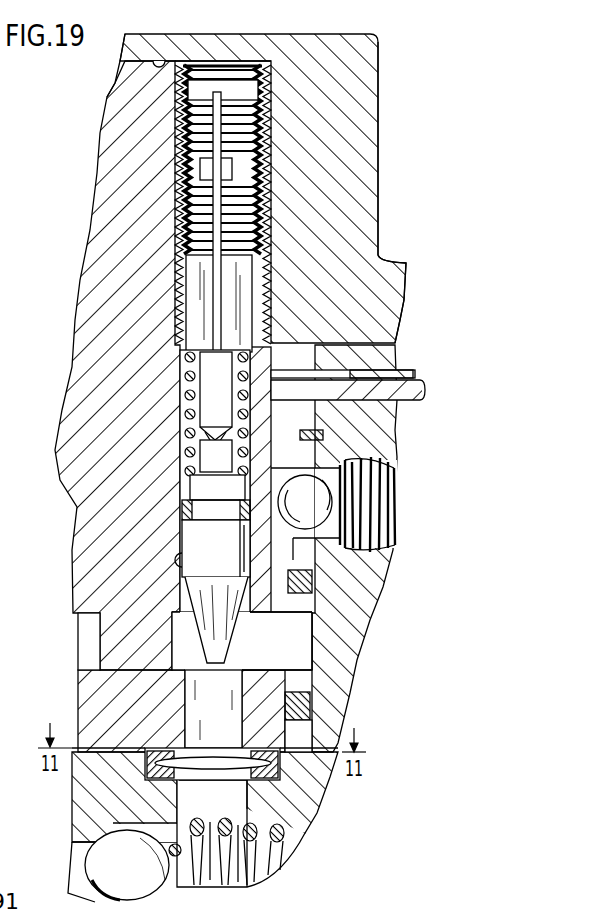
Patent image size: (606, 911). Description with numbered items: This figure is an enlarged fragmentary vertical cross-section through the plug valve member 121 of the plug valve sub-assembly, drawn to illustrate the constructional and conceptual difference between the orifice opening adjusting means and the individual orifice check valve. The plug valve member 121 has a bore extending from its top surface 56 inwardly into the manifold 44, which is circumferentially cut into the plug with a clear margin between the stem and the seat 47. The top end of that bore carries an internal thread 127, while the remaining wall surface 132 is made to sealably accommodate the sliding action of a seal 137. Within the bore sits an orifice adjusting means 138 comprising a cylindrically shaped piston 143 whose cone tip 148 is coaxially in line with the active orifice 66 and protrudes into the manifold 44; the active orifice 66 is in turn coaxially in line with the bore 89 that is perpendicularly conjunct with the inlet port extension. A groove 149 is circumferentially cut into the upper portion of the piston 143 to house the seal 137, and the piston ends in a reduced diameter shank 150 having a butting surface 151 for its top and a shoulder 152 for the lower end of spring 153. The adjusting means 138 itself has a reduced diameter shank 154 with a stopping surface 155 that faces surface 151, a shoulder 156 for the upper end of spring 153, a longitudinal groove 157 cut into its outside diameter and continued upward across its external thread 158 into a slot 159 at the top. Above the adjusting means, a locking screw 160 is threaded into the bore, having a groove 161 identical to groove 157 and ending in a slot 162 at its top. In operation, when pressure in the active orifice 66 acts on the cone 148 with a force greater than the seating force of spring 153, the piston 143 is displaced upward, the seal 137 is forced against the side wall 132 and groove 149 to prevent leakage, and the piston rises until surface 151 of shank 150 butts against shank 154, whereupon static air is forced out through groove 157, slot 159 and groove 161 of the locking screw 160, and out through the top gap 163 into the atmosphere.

The manifold 44 is at (267, 628).
The seat 47 is at (238, 662).
The top surface 56 is at (152, 60).
The active orifice 66 is at (214, 703).
The bore 89 is at (220, 792).
The plug valve member 121 is at (121, 69).
The internal thread 127 is at (263, 303).
The wall surface 132 is at (182, 566).
The seal 137 is at (187, 510).
The orifice adjusting means 138 is at (227, 280).
The piston 143 is at (229, 552).
The cone tip 148 is at (217, 610).
The groove 149 is at (200, 520).
The reduced diameter shank 150 is at (215, 461).
The butting surface 151 is at (212, 448).
The shoulder 152 is at (190, 488).
The spring 153 is at (205, 432).
The reduced diameter shank 154 is at (215, 377).
The stopping surface 155 is at (213, 420).
The shoulder 156 is at (197, 350).
The groove 157 is at (217, 307).
The external thread 158 is at (177, 227).
The slot 159 is at (183, 182).
The locking screw 160 is at (182, 143).
The groove 161 is at (182, 122).
The slot 162 is at (182, 92).
The top gap 163 is at (273, 68).